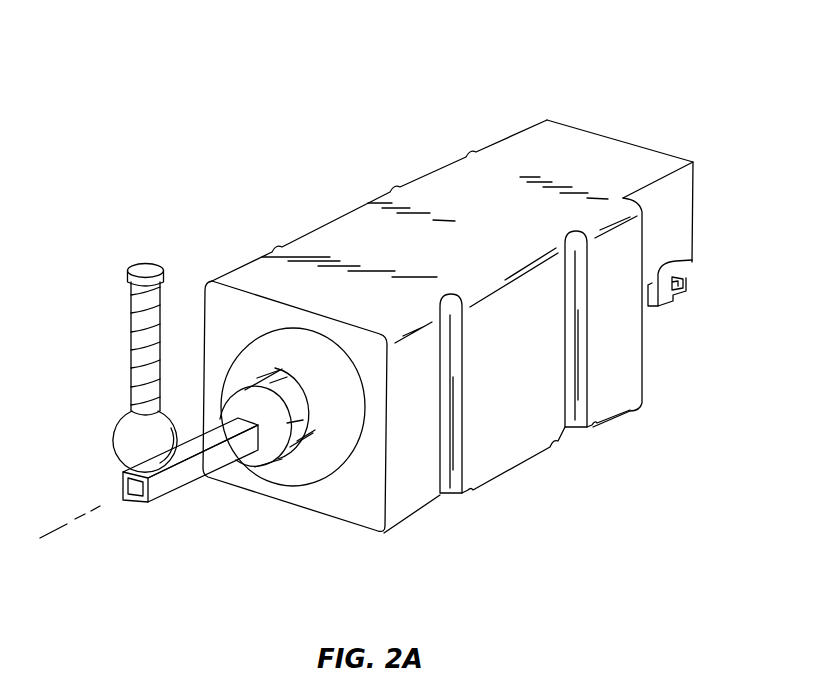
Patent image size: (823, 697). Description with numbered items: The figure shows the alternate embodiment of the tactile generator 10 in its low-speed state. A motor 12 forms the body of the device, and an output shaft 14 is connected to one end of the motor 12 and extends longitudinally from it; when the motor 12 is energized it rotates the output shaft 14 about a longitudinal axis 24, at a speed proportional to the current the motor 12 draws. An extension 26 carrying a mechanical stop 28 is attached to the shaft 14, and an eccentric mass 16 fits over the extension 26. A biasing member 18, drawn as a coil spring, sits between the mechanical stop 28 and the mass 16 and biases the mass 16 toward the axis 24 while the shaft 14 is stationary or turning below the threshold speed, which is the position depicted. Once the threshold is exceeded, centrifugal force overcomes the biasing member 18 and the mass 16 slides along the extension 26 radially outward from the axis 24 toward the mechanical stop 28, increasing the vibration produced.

The tactile generator 10 is at (379, 290).
The motor 12 is at (475, 197).
The output shaft 14 is at (187, 477).
The eccentric mass 16 is at (142, 445).
The biasing member 18 is at (98, 307).
The longitudinal axis 24 is at (100, 506).
The extension 26 is at (145, 315).
The mechanical stop 28 is at (141, 262).